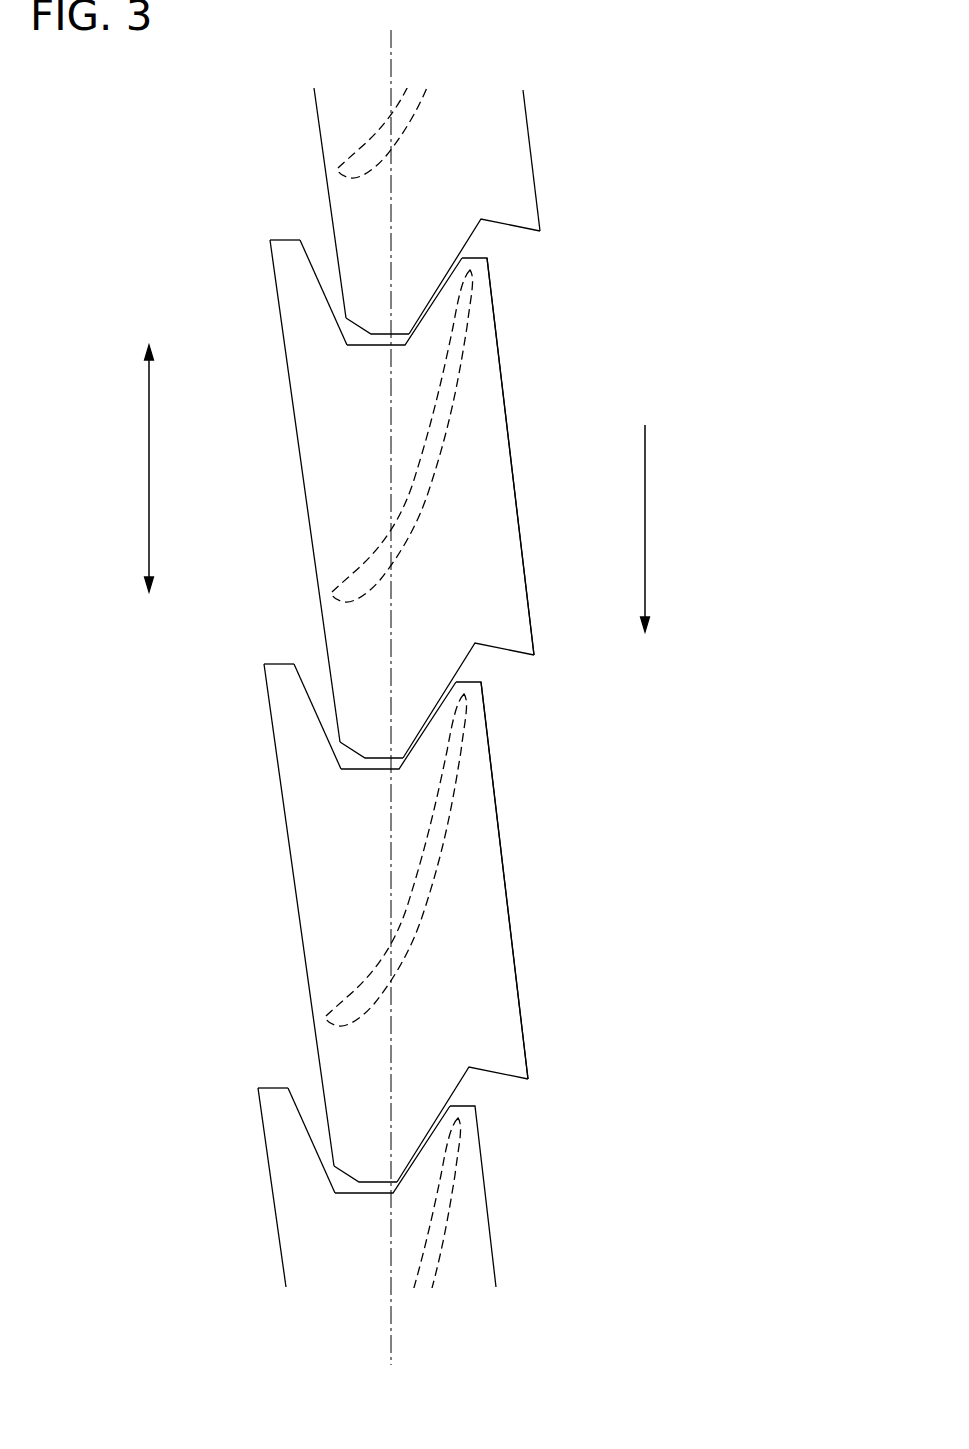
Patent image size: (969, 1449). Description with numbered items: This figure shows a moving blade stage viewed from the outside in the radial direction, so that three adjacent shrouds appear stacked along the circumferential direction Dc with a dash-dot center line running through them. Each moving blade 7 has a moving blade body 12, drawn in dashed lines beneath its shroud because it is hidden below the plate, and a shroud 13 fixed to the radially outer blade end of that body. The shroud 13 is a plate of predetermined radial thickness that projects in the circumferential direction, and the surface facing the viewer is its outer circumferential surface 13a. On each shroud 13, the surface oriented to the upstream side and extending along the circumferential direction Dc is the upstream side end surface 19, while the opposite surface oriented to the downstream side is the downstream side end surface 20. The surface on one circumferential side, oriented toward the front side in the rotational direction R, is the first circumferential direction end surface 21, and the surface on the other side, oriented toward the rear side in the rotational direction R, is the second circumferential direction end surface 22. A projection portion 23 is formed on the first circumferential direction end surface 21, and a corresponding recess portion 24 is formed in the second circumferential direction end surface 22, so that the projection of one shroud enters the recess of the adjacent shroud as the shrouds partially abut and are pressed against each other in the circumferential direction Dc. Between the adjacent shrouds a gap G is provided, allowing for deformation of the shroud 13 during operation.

The moving blade 7 is at (411, 724).
The moving blade body 12 is at (366, 564).
The shroud 13 is at (411, 687).
The outer circumferential surface 13a is at (489, 474).
The upstream side end surface 19 is at (296, 429).
The downstream side end surface 20 is at (505, 405).
The first circumferential direction end surface 21 is at (518, 654).
The second circumferential direction end surface 22 is at (283, 240).
The projection portion 23 is at (358, 715).
The recess portion 24 is at (312, 255).
The gap G is at (378, 340).
The circumferential direction Dc is at (132, 468).
The rotational direction R is at (659, 528).